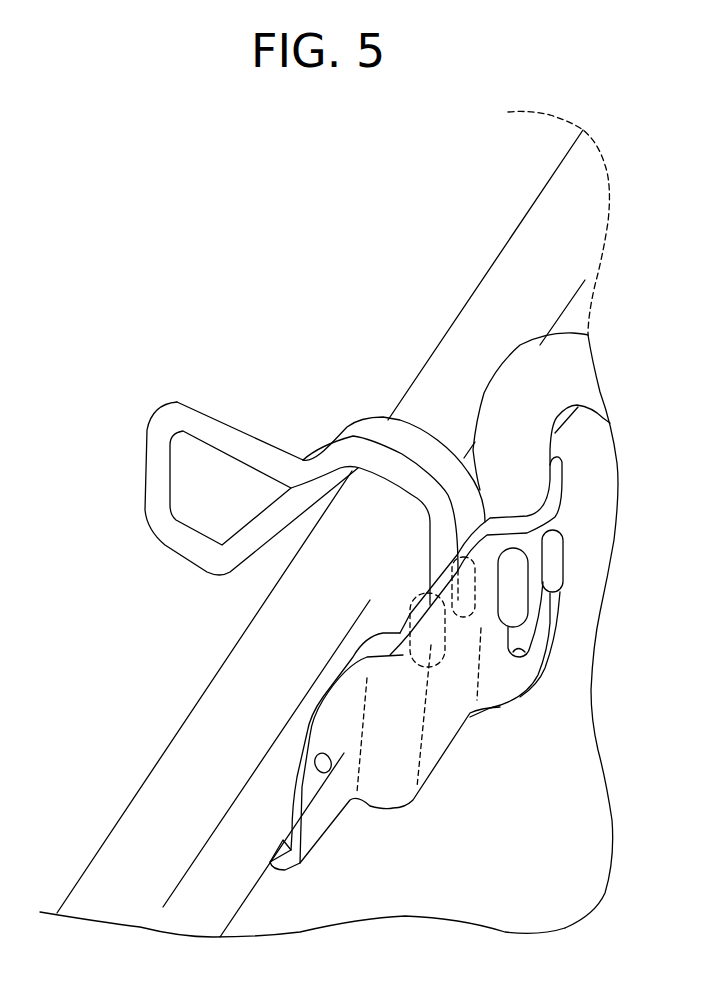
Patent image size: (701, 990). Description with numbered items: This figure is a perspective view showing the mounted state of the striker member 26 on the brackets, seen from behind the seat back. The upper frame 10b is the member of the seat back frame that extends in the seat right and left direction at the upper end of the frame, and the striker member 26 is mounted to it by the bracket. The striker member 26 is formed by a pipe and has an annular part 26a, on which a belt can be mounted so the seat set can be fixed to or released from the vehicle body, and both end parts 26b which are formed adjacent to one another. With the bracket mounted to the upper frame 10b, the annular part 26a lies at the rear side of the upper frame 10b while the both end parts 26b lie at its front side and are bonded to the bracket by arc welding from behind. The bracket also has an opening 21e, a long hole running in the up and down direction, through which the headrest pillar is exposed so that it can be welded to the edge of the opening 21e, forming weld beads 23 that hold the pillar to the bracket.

The upper frame 10b is at (217, 717).
The striker member 26 is at (280, 534).
The annular part 26a is at (160, 479).
The both end parts 26b is at (380, 462).
The opening 21e is at (532, 660).
The weld beads 23 is at (508, 608).